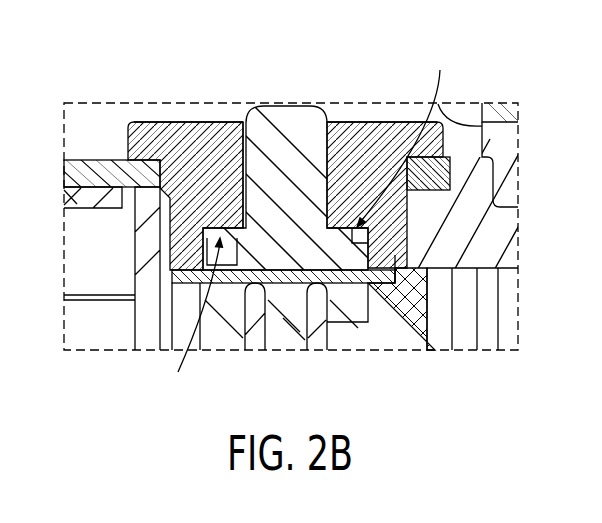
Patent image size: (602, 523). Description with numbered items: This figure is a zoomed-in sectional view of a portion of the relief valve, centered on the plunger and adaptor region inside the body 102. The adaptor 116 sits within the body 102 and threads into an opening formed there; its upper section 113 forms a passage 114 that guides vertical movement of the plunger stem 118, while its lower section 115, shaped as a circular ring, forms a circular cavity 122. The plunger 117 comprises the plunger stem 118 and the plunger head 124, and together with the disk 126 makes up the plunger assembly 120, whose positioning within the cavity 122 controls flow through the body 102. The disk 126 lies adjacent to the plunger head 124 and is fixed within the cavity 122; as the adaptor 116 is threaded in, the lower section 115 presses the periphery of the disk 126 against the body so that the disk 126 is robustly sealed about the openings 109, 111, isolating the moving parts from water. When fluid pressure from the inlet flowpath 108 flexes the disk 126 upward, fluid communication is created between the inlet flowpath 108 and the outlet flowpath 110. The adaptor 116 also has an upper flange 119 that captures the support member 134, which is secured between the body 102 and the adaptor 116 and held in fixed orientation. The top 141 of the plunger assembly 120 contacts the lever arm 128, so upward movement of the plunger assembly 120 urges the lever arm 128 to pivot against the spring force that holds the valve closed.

The body 102 is at (137, 317).
The inlet flowpath 108 is at (233, 325).
The opening 109 is at (222, 310).
The outlet flowpath 110 is at (288, 310).
The opening 111 is at (300, 320).
The upper section 113 is at (227, 165).
The passage 114 is at (246, 150).
The lower section 115 is at (170, 243).
The adaptor 116 is at (238, 200).
The plunger 117 is at (402, 217).
The plunger stem 118 is at (298, 138).
The upper flange 119 is at (447, 153).
The plunger assembly 120 is at (157, 193).
The circular cavity 122 is at (307, 222).
The plunger head 124 is at (402, 245).
The disk 126 is at (385, 335).
The lever arm 128 is at (165, 312).
The support member 134 is at (78, 165).
The top 141 is at (286, 105).